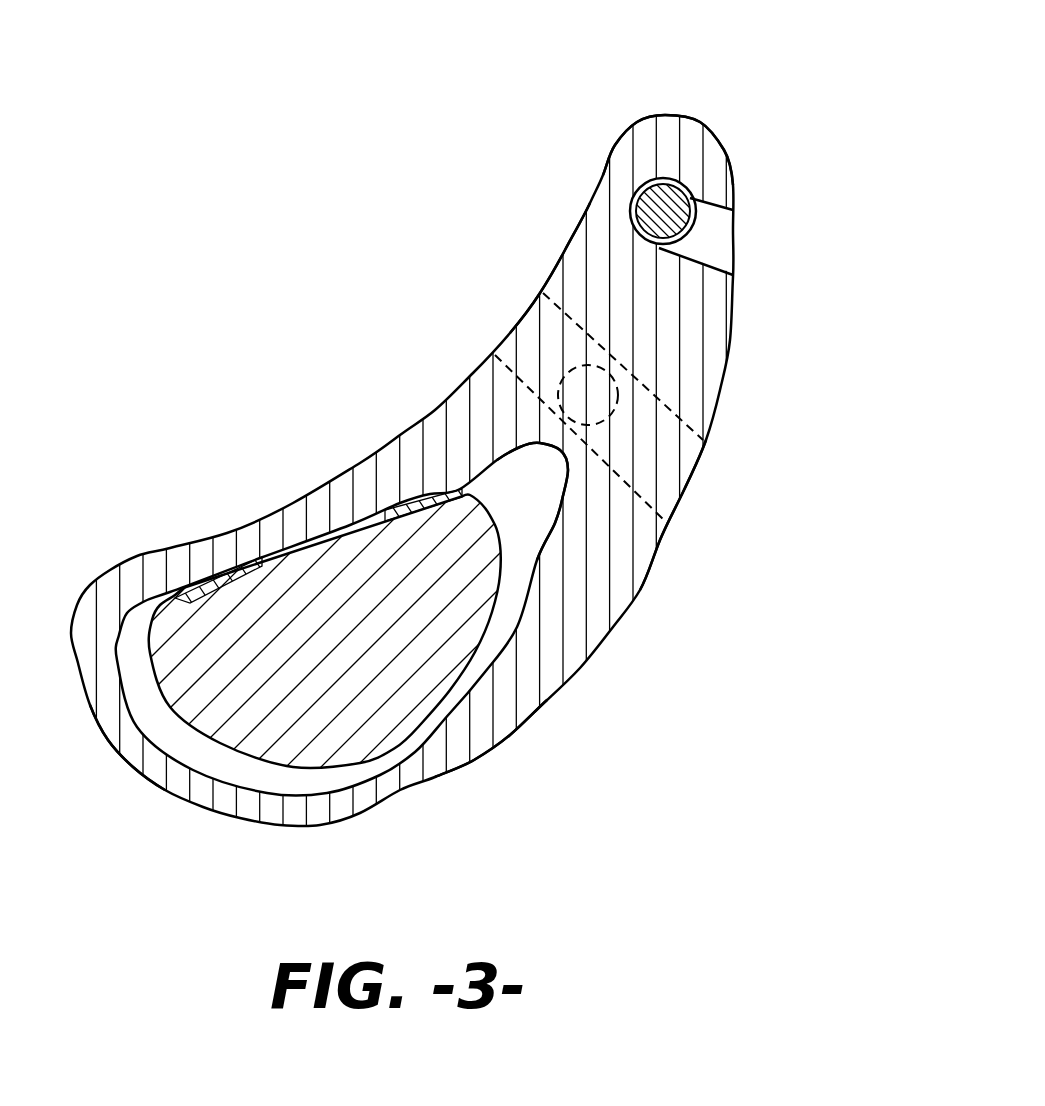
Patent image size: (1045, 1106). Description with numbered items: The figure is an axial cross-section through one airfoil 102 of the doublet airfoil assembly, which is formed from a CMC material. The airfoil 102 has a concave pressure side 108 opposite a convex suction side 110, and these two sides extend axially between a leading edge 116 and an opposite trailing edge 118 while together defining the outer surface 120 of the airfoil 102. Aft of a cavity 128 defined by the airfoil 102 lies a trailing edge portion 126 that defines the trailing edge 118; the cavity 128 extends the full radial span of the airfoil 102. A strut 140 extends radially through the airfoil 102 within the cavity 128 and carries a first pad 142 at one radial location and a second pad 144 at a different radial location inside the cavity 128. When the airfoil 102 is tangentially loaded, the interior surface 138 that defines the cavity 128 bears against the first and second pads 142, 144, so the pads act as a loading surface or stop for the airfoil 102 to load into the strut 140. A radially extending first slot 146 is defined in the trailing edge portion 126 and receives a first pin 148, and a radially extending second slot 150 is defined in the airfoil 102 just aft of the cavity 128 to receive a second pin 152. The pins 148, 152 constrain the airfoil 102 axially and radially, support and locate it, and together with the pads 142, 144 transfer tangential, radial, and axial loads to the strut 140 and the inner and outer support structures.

The airfoil 102 is at (218, 321).
The pressure side 108 is at (375, 360).
The suction side 110 is at (683, 582).
The leading edge 116 is at (130, 778).
The trailing edge 118 is at (677, 100).
The outer surface 120 is at (472, 762).
The trailing edge portion 126 is at (590, 268).
The cavity 128 is at (318, 786).
The interior surface 138 is at (540, 518).
The strut 140 is at (335, 595).
The first pad 142 is at (205, 578).
The second pad 144 is at (422, 495).
The first slot 146 is at (702, 228).
The first pin 148 is at (655, 212).
The second slot 150 is at (668, 466).
The second pin 152 is at (555, 400).